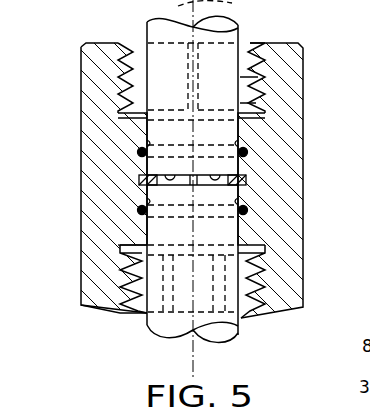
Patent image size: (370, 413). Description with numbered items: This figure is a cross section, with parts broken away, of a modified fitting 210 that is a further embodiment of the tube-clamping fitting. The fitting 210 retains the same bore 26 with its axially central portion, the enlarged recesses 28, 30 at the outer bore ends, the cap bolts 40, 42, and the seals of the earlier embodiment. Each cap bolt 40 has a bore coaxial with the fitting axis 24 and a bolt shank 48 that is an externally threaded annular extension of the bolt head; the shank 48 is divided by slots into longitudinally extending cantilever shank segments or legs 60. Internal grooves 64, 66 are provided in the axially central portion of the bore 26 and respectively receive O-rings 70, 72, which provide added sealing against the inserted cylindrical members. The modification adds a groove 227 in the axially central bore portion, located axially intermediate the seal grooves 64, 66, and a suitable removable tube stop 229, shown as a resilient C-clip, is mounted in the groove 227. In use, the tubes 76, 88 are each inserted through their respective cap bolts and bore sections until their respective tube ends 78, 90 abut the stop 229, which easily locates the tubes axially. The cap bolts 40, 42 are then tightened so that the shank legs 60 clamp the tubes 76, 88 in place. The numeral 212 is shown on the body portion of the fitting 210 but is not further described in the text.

The fitting 210 is at (77, 38).
The coupling body 212 is at (78, 84).
The tube 76 is at (144, 32).
The fitting axis 24 is at (250, 8).
The cap bolt 40 is at (253, 49).
The bolt shank 48 is at (248, 77).
The shank segments 60 is at (133, 70).
The bore 26 is at (151, 126).
The recess 28 is at (133, 116).
The O-ring 72 is at (140, 150).
The tube end 78 is at (140, 179).
The groove 227 is at (139, 208).
The O-ring 70 is at (122, 246).
The recess 30 is at (120, 260).
The cap bolt 42 is at (135, 318).
The tube 88 is at (170, 338).
The internal groove 66 is at (247, 150).
The tube stop 229 is at (246, 180).
The tube end 90 is at (248, 207).
The internal groove 64 is at (303, 234).